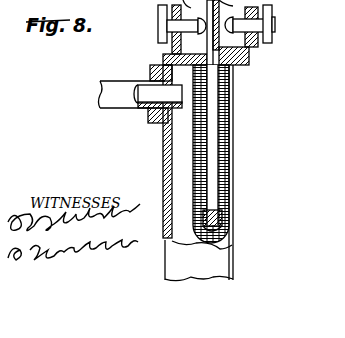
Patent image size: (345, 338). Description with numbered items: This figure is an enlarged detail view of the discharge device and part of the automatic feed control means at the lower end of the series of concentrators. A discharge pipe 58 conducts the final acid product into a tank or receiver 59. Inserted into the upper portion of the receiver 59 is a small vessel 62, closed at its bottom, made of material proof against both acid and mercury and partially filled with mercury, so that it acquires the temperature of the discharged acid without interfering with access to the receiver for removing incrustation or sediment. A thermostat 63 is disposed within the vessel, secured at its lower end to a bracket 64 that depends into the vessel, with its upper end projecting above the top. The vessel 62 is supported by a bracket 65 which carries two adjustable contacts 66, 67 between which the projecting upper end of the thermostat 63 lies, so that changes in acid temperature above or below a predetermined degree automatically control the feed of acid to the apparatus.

The discharge pipe 58 is at (144, 109).
The receiver 59 is at (223, 260).
The vessel 62 is at (194, 180).
The thermostat 63 is at (233, 181).
The bracket 64 is at (240, 28).
The bracket 65 is at (249, 62).
The adjustable contact 66 is at (272, 42).
The adjustable contact 67 is at (163, 22).